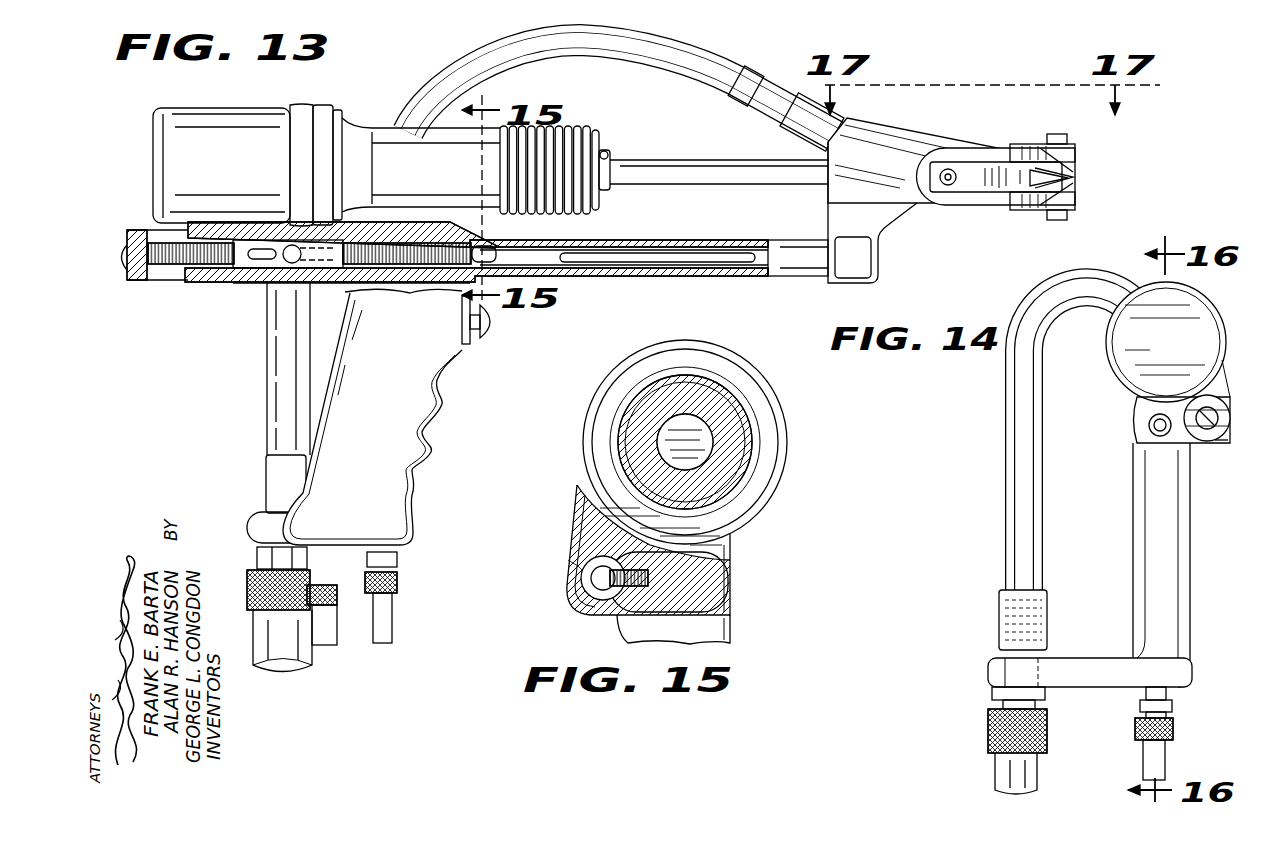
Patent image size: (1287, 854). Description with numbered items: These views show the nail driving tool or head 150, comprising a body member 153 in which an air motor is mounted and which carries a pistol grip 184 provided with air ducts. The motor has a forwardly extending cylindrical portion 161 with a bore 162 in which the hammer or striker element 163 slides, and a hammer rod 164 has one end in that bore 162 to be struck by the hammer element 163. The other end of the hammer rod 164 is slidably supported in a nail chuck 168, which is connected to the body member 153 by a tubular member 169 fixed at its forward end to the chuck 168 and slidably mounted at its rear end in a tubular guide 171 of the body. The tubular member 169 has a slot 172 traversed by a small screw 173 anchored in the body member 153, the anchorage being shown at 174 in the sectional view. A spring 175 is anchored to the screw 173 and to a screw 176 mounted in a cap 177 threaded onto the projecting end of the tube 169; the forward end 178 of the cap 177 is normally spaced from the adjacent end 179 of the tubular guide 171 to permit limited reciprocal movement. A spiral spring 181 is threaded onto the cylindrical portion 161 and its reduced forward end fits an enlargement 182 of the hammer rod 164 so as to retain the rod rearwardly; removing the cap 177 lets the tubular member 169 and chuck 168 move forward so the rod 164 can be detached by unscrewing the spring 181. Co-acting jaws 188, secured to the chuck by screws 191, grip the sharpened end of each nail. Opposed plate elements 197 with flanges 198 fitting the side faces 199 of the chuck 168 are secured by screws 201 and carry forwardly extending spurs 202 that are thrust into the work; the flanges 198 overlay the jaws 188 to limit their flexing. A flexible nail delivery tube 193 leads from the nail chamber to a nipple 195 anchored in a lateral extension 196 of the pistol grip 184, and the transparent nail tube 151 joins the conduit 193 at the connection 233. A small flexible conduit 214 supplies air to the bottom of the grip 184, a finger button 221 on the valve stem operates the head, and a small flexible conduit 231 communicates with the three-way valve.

In FIG. 13, the nail driving tool or head 150 is at (240, 168).
In FIG. 15, the nail driving tool or head 150 is at (795, 430).
In FIG. 14, the nail driving tool or head 150 is at (1205, 348).
In FIG. 13, the nail tube 151 is at (283, 652).
In FIG. 14, the nail tube 151 is at (1003, 773).
In FIG. 13, the body member 153 is at (208, 288).
In FIG. 15, the body member 153 is at (570, 600).
In FIG. 14, the body member 153 is at (1225, 383).
In FIG. 13, the cylindrical portion 161 is at (448, 145).
In FIG. 15, the cylindrical portion 161 is at (712, 398).
In FIG. 15, the bore 162 is at (715, 447).
In FIG. 15, the hammer or striker element 163 is at (700, 436).
In FIG. 13, the hammer rod 164 is at (678, 162).
In FIG. 13, the nail chuck 168 is at (884, 218).
In FIG. 13, the tubular member 169 is at (708, 278).
In FIG. 15, the tubular member 169 is at (580, 548).
In FIG. 13, the tubular guide 171 is at (236, 284).
In FIG. 13, the slot 172 is at (640, 252).
In FIG. 15, the slot 172 is at (612, 598).
In FIG. 13, the small screw 173 is at (492, 242).
In FIG. 15, the small screw 173 is at (590, 578).
In FIG. 15, the anchoring location of screw 174 is at (650, 578).
In FIG. 13, the spring 175 is at (418, 284).
In FIG. 13, the screw 176 is at (160, 252).
In FIG. 14, the screw 176 is at (1220, 415).
In FIG. 13, the cap 177 is at (135, 278).
In FIG. 14, the cap 177 is at (1218, 440).
In FIG. 13, the forward end of cap 178 is at (176, 262).
In FIG. 13, the end of tubular guide 179 is at (192, 262).
In FIG. 13, the spiral spring 181 is at (575, 128).
In FIG. 13, the enlargement 182 is at (607, 163).
In FIG. 13, the pistol grip 184 is at (402, 407).
In FIG. 15, the pistol grip 184 is at (742, 632).
In FIG. 14, the pistol grip 184 is at (1170, 535).
In FIG. 13, the co-acting jaws 188 is at (1045, 180).
In FIG. 13, the screws 191 is at (950, 170).
In FIG. 14, the screws 191 is at (1160, 425).
In FIG. 13, the flexible nail delivery tube 193 is at (262, 386).
In FIG. 14, the flexible nail delivery tube 193 is at (1015, 433).
In FIG. 14, the nipple 195 is at (1003, 652).
In FIG. 13, the lateral extension 196 is at (248, 530).
In FIG. 14, the lateral extension 196 is at (1072, 668).
In FIG. 13, the plate elements 197 is at (1030, 146).
In FIG. 13, the flanges 198 is at (1062, 158).
In FIG. 13, the side faces 199 is at (992, 206).
In FIG. 13, the screws 201 is at (1057, 134).
In FIG. 13, the spurs 202 is at (1060, 190).
In FIG. 13, the small flexible conduit 214 is at (330, 628).
In FIG. 13, the finger button 221 is at (497, 322).
In FIG. 13, the small flexible conduit 231 is at (386, 620).
In FIG. 14, the small flexible conduit 231 is at (1154, 733).
In FIG. 13, the connection of nail tubes 233 is at (247, 588).
In FIG. 14, the connection of nail tubes 233 is at (988, 730).